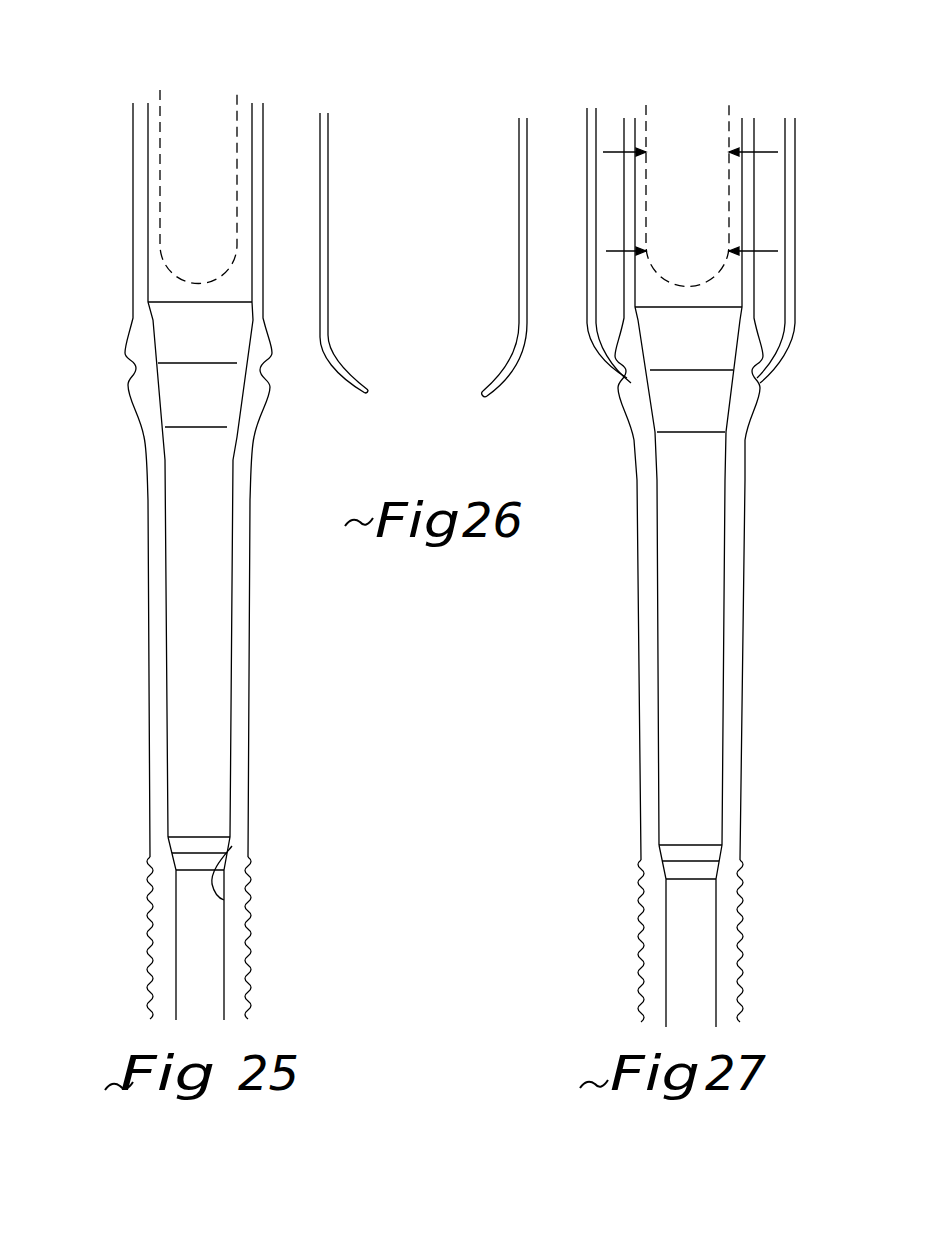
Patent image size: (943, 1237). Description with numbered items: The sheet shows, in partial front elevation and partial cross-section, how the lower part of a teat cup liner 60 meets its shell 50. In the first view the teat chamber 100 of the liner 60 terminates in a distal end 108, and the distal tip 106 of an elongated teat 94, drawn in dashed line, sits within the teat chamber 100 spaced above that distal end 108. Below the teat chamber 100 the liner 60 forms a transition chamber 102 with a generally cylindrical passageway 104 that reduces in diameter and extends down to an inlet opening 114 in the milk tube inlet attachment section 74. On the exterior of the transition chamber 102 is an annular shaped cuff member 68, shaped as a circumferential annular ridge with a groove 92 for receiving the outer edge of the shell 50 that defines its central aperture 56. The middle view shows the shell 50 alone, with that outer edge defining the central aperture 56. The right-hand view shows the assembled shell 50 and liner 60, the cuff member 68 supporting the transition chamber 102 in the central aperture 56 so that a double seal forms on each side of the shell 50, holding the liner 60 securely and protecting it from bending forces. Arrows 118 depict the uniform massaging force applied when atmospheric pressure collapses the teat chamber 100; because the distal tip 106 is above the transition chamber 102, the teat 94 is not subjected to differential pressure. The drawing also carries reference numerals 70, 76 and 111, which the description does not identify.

In FIG. 26, the teat cup shell 50 is at (329, 137).
In FIG. 27, the teat cup shell 50 is at (792, 300).
In FIG. 26, the central aperture 56 is at (368, 395).
In FIG. 25, the liner 60 is at (133, 281).
In FIG. 25, the annular shaped cuff member 68 is at (263, 400).
In FIG. 27, the annular shaped cuff member 68 is at (753, 408).
In FIG. 25, the tube 70 is at (147, 498).
In FIG. 27, the tube 70 is at (689, 489).
In FIG. 25, the milk tube inlet attachment section 74 is at (150, 852).
In FIG. 27, the milk tube inlet attachment section 74 is at (640, 857).
In FIG. 25, the threads 76 is at (253, 922).
In FIG. 27, the threads 76 is at (638, 957).
In FIG. 25, the groove 92 is at (127, 370).
In FIG. 27, the groove 92 is at (759, 380).
In FIG. 25, the teat 94 is at (160, 98).
In FIG. 27, the teat 94 is at (730, 112).
In FIG. 25, the teat chamber 100 is at (243, 128).
In FIG. 27, the teat chamber 100 is at (768, 190).
In FIG. 25, the transition chamber 102 is at (187, 318).
In FIG. 27, the transition chamber 102 is at (680, 403).
In FIG. 25, the generally cylindrical passageway 104 is at (193, 573).
In FIG. 27, the generally cylindrical passageway 104 is at (700, 508).
In FIG. 25, the distal tip 106 is at (200, 262).
In FIG. 27, the distal tip 106 is at (657, 287).
In FIG. 25, the distal end 108 is at (187, 301).
In FIG. 25, the lower section 111 is at (190, 909).
In FIG. 27, the lower section 111 is at (695, 918).
In FIG. 25, the inlet opening 114 is at (232, 846).
In FIG. 27, the inlet opening 114 is at (682, 860).
In FIG. 27, the arrows 118 is at (606, 152).